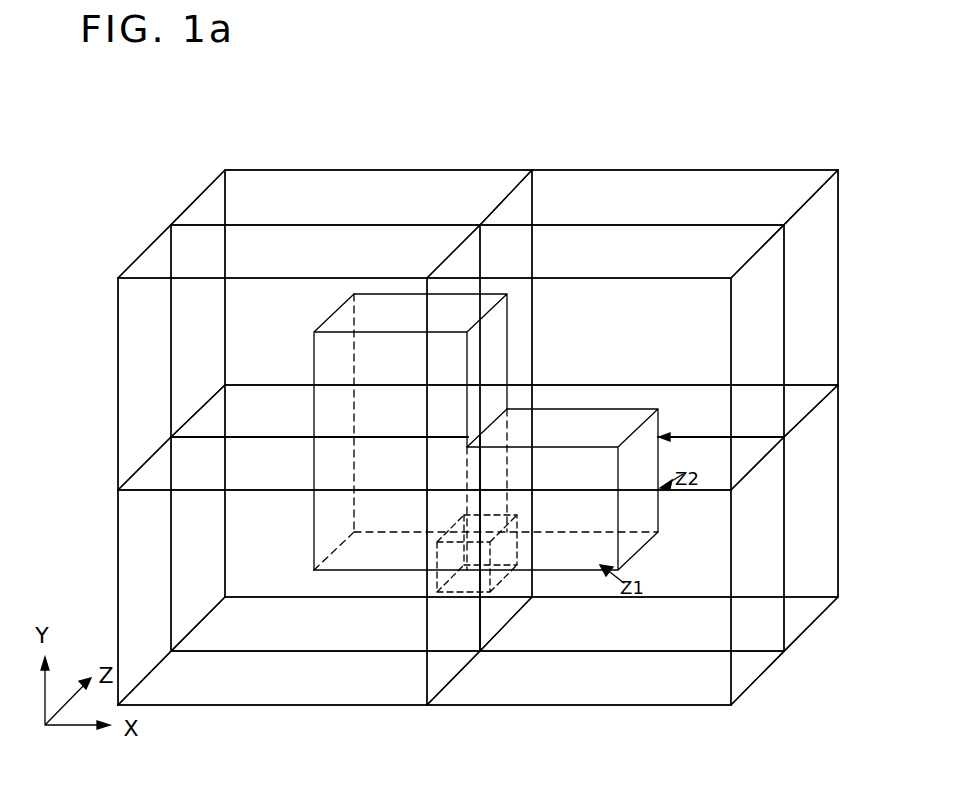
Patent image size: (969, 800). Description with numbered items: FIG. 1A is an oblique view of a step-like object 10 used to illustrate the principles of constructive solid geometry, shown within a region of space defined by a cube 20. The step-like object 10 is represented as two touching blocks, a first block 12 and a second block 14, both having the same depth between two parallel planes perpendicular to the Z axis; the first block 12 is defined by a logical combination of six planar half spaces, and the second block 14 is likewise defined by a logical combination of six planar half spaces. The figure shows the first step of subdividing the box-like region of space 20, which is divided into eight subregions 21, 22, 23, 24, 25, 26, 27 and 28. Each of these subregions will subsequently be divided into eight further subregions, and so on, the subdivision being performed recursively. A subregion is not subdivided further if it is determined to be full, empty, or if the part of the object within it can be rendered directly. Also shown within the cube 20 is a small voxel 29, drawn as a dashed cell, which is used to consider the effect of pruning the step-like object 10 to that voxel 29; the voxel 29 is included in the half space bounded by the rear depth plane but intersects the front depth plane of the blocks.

The step-like object 10 is at (477, 441).
The first block 12 is at (312, 363).
The second block 14 is at (662, 503).
The cube 20 is at (784, 651).
The subregion 21 is at (150, 263).
The subregion 22 is at (210, 207).
The subregion 23 is at (140, 583).
The subregion 24 is at (190, 536).
The subregion 25 is at (763, 343).
The subregion 26 is at (817, 255).
The subregion 27 is at (757, 557).
The subregion 28 is at (812, 463).
The voxel 29 is at (503, 588).